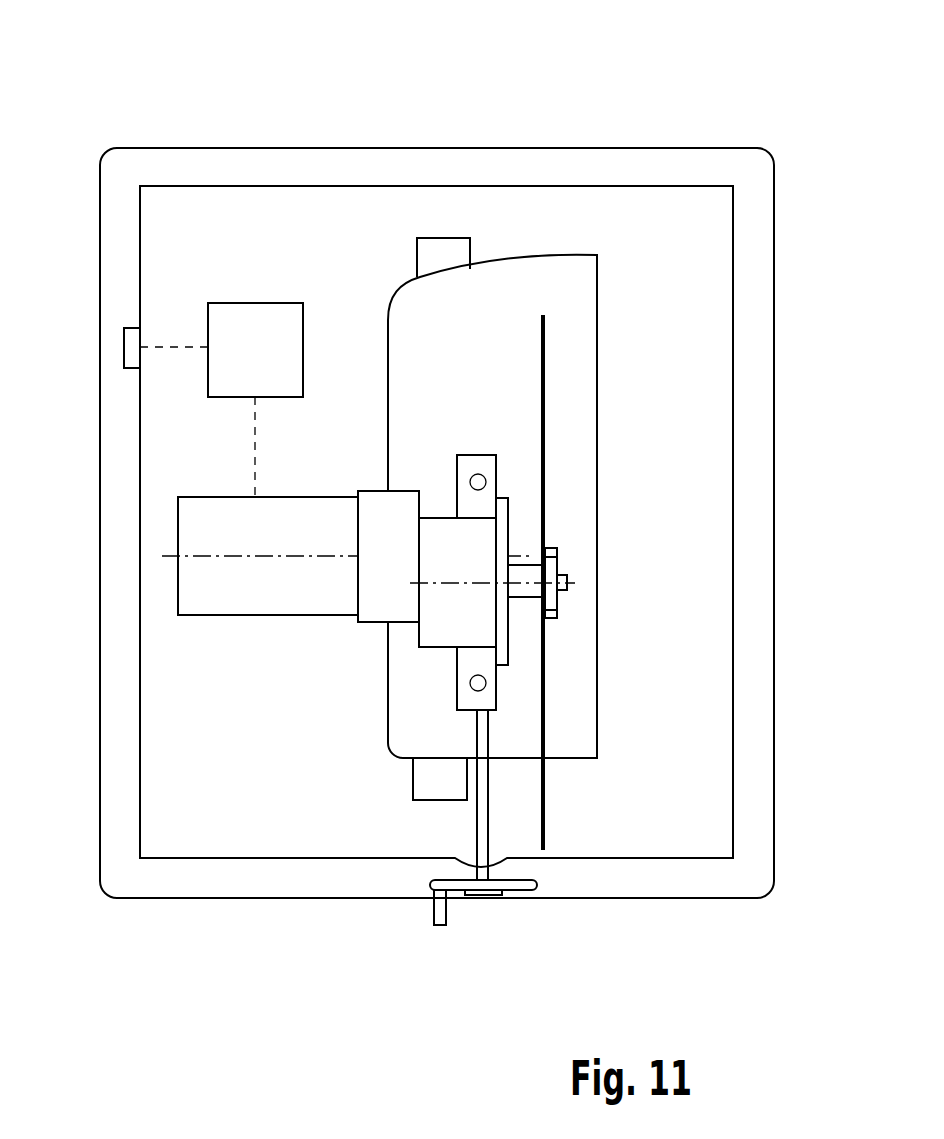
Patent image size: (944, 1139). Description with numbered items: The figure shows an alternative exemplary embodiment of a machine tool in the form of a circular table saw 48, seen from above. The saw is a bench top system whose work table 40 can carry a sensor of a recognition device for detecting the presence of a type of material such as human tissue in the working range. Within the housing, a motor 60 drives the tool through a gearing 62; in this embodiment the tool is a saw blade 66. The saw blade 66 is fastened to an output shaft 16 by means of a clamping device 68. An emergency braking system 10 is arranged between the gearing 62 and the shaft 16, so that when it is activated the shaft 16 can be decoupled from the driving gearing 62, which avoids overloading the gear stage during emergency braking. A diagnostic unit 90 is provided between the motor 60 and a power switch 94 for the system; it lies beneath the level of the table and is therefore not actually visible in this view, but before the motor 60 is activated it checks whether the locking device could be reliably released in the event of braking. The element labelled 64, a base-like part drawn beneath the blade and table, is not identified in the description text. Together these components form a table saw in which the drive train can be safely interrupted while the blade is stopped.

The emergency braking system 10 is at (443, 527).
The output shaft 16 is at (530, 570).
The work table 40 is at (657, 847).
The circular table saw 48 is at (779, 111).
The motor 60 is at (190, 598).
The gearing 62 is at (375, 615).
The base plate 64 is at (514, 883).
The saw blade 66 is at (545, 400).
The clamping device 68 is at (555, 565).
The diagnostic unit 90 is at (256, 315).
The power switch 94 is at (125, 318).